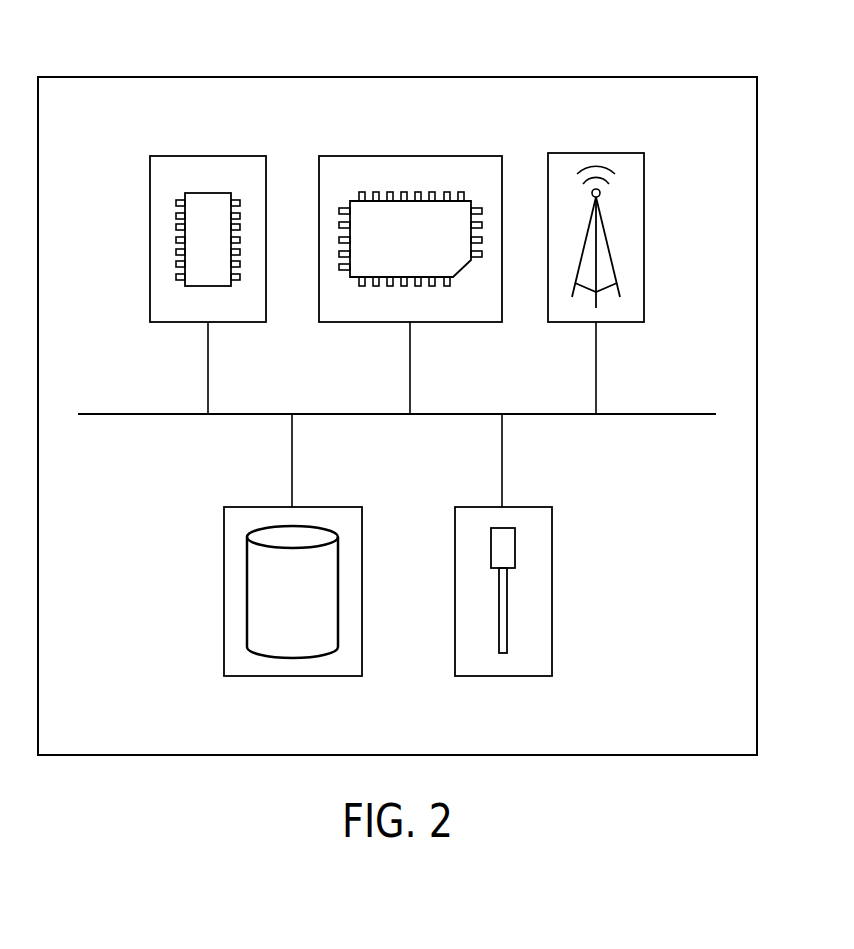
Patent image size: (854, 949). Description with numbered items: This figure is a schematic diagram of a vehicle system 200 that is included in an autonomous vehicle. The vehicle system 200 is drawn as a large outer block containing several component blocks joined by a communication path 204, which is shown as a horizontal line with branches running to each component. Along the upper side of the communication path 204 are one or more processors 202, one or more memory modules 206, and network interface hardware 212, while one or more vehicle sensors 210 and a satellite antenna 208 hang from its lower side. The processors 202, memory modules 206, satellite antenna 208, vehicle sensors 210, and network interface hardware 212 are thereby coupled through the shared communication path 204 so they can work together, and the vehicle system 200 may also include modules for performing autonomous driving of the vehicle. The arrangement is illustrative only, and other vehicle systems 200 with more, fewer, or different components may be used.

The vehicle system 200 is at (95, 77).
The processors 202 is at (208, 156).
The communication path 204 is at (672, 414).
The memory modules 206 is at (410, 156).
The satellite antenna 208 is at (502, 676).
The vehicle sensors 210 is at (292, 676).
The network interface hardware 212 is at (596, 153).